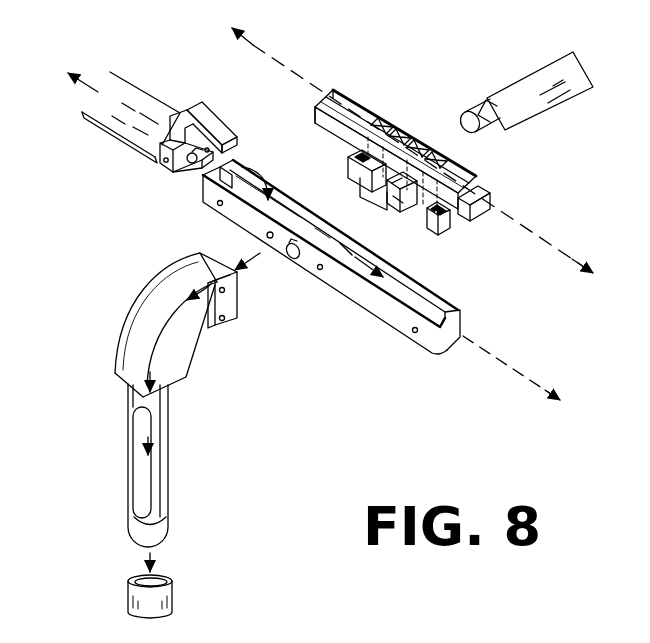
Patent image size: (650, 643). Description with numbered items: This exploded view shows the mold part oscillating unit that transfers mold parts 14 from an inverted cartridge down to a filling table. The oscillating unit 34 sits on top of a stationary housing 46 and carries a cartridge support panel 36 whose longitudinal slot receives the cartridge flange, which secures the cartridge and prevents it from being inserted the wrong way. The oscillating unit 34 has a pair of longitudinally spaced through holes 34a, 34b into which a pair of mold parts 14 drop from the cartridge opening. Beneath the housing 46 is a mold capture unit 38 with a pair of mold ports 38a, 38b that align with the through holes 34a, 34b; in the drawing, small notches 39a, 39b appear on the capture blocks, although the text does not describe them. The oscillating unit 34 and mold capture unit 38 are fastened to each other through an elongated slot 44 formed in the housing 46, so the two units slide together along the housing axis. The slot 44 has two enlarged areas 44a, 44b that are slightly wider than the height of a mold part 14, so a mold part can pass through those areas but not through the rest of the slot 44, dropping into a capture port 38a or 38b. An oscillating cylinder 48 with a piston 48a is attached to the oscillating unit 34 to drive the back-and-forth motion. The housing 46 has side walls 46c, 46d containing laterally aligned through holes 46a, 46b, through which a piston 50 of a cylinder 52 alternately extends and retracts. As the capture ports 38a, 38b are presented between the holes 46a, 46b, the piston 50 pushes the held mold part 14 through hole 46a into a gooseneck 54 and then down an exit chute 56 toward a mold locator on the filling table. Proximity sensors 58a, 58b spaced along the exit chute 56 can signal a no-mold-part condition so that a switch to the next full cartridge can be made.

The mold part 14 is at (160, 601).
The oscillating unit 34 is at (350, 103).
The through hole 34a is at (390, 113).
The through hole 34b is at (435, 143).
The cartridge support panel 36 is at (230, 125).
The mold capture unit 38 is at (400, 207).
The mold port 38a is at (368, 183).
The mold port 38b is at (412, 232).
The notch of left clip block 39a is at (352, 160).
The notch of right clip block 39b is at (447, 215).
The elongated slot 44 is at (397, 288).
The enlarged slot area 44a is at (228, 185).
The enlarged slot area 44b is at (318, 250).
The stationary housing 46 is at (388, 320).
The through hole 46a is at (288, 253).
The through hole 46b is at (313, 228).
The side wall 46c is at (415, 334).
The side wall 46d is at (462, 308).
The oscillating cylinder 48 is at (134, 92).
The piston 48a is at (190, 161).
The piston 50 is at (478, 110).
The cylinder 52 is at (542, 94).
The gooseneck 54 is at (178, 357).
The exit chute 56 is at (160, 447).
The proximity sensor 58a is at (158, 398).
The proximity sensor 58b is at (158, 520).